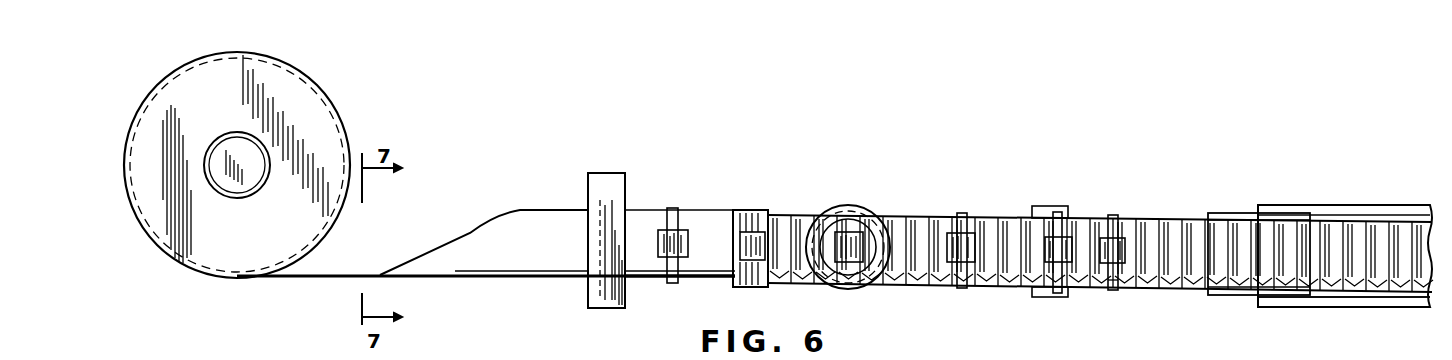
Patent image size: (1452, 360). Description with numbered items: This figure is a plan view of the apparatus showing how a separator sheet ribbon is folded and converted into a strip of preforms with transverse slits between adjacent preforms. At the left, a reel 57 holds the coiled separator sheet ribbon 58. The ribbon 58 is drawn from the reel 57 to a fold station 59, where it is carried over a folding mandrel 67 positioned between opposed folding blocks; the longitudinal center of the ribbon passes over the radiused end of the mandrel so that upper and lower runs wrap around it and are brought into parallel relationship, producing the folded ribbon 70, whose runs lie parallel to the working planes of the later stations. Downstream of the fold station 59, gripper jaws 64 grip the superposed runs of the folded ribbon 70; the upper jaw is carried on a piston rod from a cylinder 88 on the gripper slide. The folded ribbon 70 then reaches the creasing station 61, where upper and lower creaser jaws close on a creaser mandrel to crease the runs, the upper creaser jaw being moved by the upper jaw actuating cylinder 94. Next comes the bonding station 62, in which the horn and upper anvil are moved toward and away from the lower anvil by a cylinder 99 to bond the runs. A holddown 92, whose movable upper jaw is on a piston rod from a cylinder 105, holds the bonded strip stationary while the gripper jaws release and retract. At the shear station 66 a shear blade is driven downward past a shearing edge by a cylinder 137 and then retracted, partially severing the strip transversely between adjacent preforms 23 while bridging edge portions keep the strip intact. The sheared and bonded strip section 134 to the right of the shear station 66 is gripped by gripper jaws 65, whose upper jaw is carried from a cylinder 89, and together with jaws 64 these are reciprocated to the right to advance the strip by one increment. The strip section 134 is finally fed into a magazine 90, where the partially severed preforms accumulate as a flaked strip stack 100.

The reel 57 is at (313, 95).
The separator sheet ribbon 58 is at (335, 272).
The fold station 59 is at (593, 166).
The folding mandrel 67 is at (597, 252).
The folded ribbon 70 is at (642, 218).
The gripper jaws 64 is at (672, 283).
The cylinder 88 is at (683, 237).
The creasing station 61 is at (750, 198).
The upper jaw actuating cylinder 94 is at (762, 240).
The preforms 23 is at (923, 263).
The bonding station 62 is at (843, 197).
The cylinder 99 is at (858, 240).
The holddown 92 is at (955, 198).
The cylinder 105 is at (970, 237).
The shear station 66 is at (1082, 204).
The cylinder 137 is at (1065, 255).
The sheared and bonded strip section 134 is at (1095, 218).
The cylinder 89 is at (1120, 243).
The gripper jaws 65 is at (1123, 285).
The magazine 90 is at (1332, 210).
The flaked strip stack 100 is at (1370, 285).